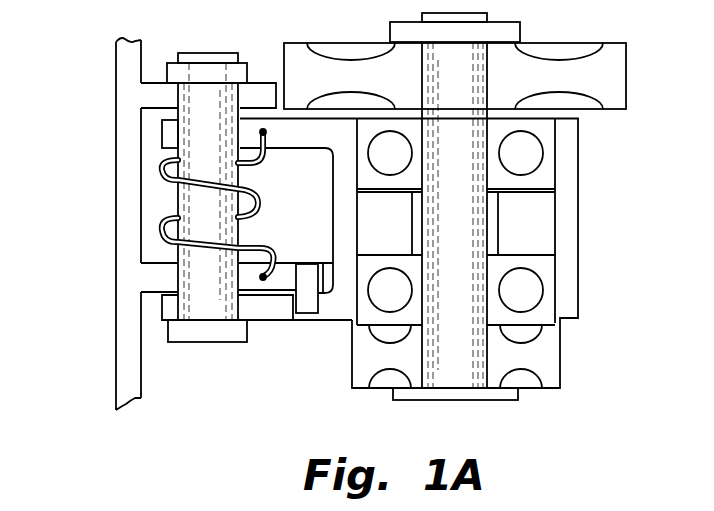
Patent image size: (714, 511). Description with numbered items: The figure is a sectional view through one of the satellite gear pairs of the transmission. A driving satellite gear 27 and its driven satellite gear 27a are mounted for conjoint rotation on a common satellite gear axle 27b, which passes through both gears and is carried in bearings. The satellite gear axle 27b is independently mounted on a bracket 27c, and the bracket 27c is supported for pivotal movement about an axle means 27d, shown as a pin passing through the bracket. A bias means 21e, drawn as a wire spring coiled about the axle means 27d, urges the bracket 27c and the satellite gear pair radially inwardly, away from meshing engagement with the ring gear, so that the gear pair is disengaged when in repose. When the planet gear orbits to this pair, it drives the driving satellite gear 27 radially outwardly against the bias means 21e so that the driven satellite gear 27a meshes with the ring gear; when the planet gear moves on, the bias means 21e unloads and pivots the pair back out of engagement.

The driving satellite gear 27 is at (610, 72).
The driven satellite gear 27a is at (547, 353).
The satellite gear axle 27b is at (452, 226).
The bracket 27c is at (273, 320).
The axle means 27d is at (203, 119).
The bias means 21e is at (170, 170).